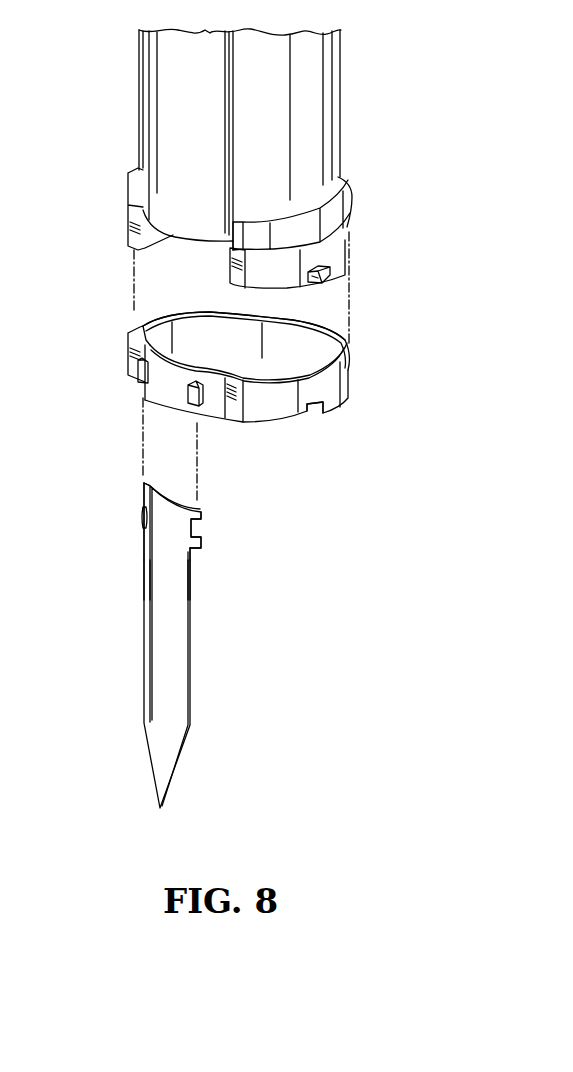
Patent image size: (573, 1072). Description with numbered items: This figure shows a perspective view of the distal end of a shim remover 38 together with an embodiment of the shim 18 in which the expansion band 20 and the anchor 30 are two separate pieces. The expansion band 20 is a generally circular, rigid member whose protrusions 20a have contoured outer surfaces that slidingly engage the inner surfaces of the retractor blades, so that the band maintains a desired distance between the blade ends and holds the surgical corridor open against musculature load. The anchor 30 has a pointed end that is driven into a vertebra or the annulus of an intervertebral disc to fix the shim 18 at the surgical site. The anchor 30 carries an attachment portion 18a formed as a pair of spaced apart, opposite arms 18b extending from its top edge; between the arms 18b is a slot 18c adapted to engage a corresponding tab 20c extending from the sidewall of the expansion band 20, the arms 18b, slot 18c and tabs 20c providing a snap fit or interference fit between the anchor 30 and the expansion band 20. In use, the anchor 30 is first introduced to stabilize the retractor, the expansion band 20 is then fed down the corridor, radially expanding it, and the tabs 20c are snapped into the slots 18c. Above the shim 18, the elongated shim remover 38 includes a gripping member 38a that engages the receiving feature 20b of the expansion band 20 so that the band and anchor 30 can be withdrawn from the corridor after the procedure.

The shim remover 38 is at (374, 69).
The gripping member 38a is at (324, 283).
The expansion band 20 is at (365, 413).
The protrusion 20a is at (340, 322).
The receiving feature 20b is at (310, 518).
The tab 20c is at (143, 380).
The shim 18 is at (450, 399).
The attachment portion 18a is at (136, 529).
The arm 18b is at (203, 516).
The slot 18c is at (143, 505).
The anchor 30 is at (130, 657).